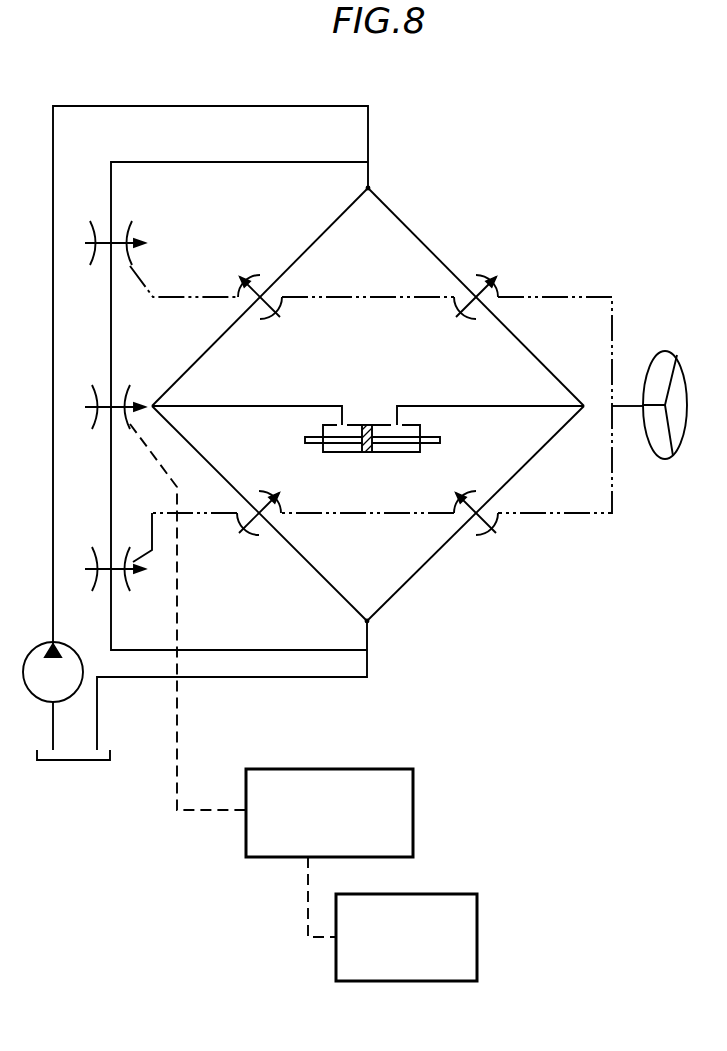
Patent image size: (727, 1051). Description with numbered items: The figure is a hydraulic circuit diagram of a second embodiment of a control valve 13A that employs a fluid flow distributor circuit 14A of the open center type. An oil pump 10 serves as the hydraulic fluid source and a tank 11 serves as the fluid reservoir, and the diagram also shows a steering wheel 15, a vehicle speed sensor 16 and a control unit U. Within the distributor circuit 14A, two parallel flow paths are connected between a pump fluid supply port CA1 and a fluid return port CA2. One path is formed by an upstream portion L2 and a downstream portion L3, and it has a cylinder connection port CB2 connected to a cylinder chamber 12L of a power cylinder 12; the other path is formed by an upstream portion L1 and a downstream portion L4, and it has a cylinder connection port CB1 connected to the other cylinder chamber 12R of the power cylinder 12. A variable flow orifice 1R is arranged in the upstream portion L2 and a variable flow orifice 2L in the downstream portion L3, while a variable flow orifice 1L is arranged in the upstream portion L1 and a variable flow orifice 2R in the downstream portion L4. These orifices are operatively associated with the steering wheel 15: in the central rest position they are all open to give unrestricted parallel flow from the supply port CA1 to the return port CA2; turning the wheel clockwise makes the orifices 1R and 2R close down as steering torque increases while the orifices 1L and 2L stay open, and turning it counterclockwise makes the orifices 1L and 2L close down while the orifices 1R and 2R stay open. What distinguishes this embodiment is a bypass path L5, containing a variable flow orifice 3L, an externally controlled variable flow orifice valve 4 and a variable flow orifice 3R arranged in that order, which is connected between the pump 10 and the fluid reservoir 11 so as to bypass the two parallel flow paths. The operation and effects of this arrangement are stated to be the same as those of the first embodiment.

The variable flow orifice 1R is at (252, 281).
The variable flow orifice 1L is at (486, 281).
The variable flow orifice 2L is at (256, 527).
The variable flow orifice 2R is at (484, 526).
The variable flow orifice 3L is at (111, 229).
The variable flow orifice 3R is at (110, 556).
The externally controlled variable flow orifice valve 4 is at (115, 398).
The oil pump 10 is at (72, 650).
The tank 11 is at (77, 763).
The power cylinder 12 is at (371, 464).
The cylinder chamber 12L is at (340, 453).
The cylinder chamber 12R is at (408, 453).
The control valve 13A is at (528, 205).
The fluid flow distributor circuit 14A is at (568, 261).
The steering wheel 15 is at (671, 462).
The vehicle speed sensor 16 is at (477, 936).
The control unit U is at (413, 812).
The upstream portion of flow path L1 is at (424, 240).
The upstream portion of flow path L2 is at (320, 236).
The downstream portion of flow path L3 is at (324, 583).
The downstream portion of flow path L4 is at (428, 563).
The bypass path L5 is at (111, 315).
The pump fluid supply port CA1 is at (372, 186).
The fluid return port CA2 is at (371, 623).
The cylinder connection port CB1 is at (583, 412).
The cylinder connection port CB2 is at (151, 403).